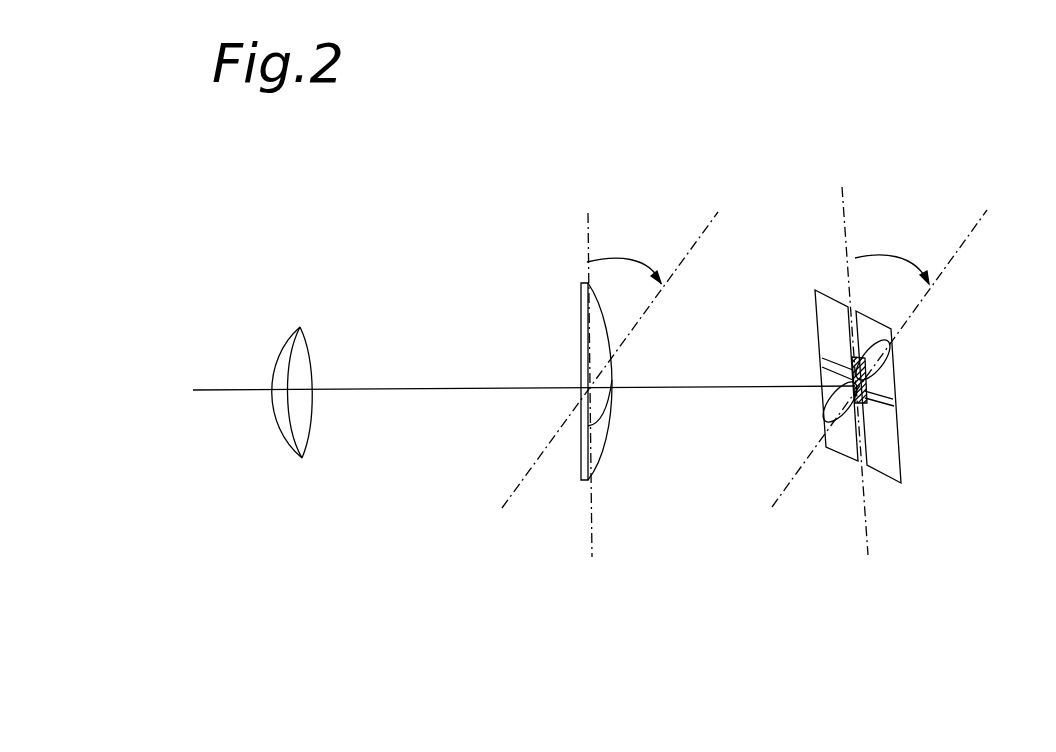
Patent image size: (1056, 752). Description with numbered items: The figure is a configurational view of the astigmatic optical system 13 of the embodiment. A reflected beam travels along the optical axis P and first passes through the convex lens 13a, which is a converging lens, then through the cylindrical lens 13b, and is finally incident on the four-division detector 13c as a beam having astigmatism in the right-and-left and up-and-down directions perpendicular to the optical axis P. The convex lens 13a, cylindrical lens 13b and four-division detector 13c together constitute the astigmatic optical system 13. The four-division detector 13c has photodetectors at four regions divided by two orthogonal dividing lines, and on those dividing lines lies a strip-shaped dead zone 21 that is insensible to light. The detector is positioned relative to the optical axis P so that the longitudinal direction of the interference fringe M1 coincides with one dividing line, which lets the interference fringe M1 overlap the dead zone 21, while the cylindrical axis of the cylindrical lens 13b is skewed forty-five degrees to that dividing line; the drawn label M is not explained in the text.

The astigmatic optical system 13 is at (953, 137).
The convex lens 13a is at (312, 448).
The cylindrical lens 13b is at (605, 472).
The 4-division detector 13c is at (877, 355).
The dead zone 21 is at (892, 398).
The mirror plate M is at (822, 363).
The interference fringe M1 is at (890, 363).
The optical axis P is at (225, 390).